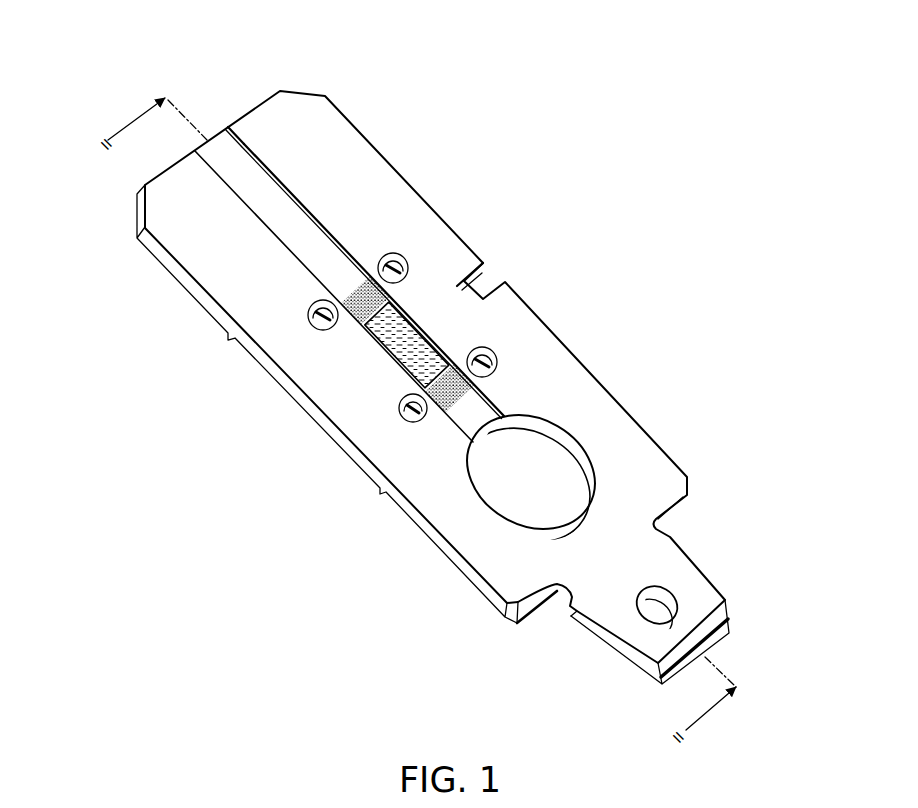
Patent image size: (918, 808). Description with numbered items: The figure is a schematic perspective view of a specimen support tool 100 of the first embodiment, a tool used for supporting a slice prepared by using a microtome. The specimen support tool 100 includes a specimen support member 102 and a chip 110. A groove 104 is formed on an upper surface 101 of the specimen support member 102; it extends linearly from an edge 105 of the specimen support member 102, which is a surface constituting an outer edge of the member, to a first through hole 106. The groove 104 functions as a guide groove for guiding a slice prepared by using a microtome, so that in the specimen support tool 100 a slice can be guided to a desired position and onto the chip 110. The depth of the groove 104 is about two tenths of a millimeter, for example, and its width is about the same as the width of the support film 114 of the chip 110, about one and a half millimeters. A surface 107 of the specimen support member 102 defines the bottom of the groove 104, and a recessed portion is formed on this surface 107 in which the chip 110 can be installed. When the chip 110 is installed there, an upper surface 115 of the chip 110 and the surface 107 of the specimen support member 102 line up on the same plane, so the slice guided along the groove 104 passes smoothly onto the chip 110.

The specimen support tool 100 is at (514, 148).
The upper surface 101 is at (359, 154).
The specimen support member 102 is at (515, 337).
The groove 104 is at (290, 228).
The edge 105 is at (213, 131).
The first through hole 106 is at (535, 470).
The surface 107 is at (320, 254).
The chip 110 is at (407, 348).
The support film 114 is at (418, 359).
The upper surface of the chip 115 is at (369, 291).